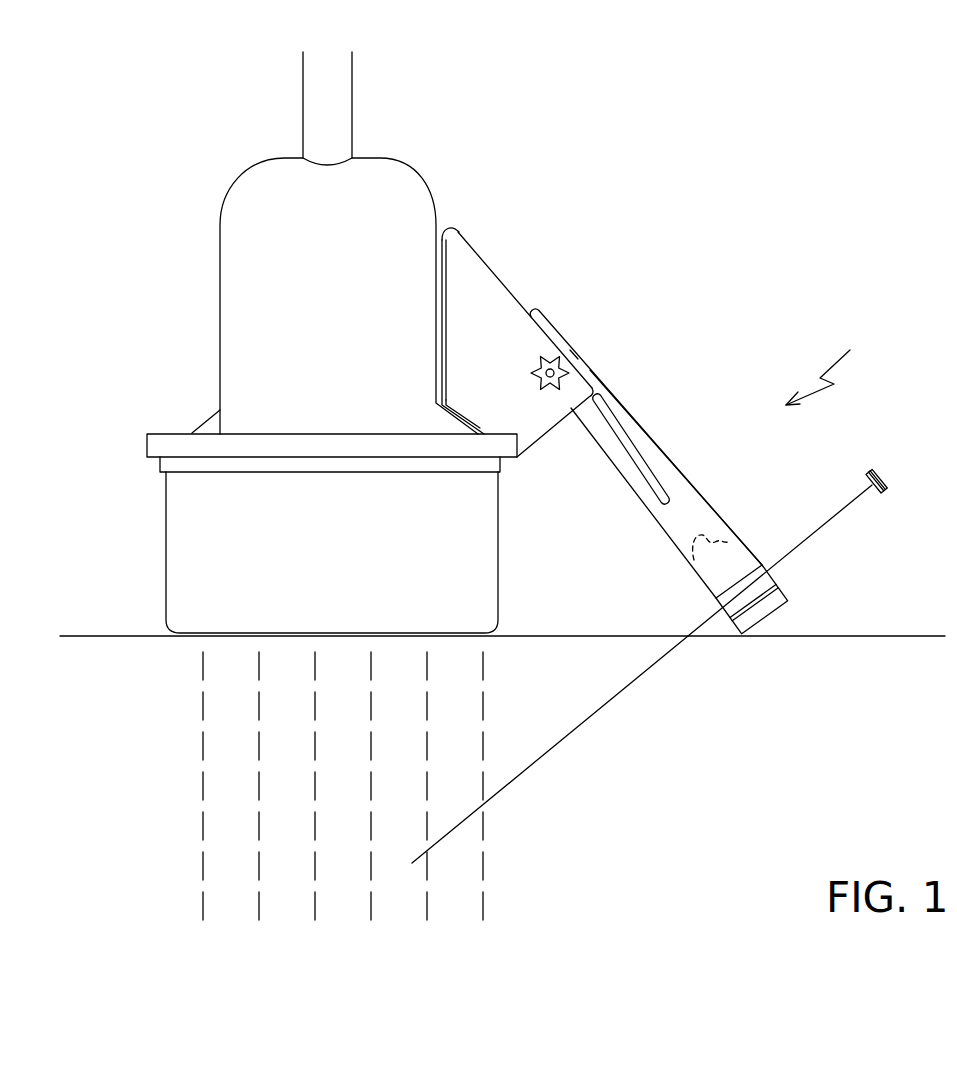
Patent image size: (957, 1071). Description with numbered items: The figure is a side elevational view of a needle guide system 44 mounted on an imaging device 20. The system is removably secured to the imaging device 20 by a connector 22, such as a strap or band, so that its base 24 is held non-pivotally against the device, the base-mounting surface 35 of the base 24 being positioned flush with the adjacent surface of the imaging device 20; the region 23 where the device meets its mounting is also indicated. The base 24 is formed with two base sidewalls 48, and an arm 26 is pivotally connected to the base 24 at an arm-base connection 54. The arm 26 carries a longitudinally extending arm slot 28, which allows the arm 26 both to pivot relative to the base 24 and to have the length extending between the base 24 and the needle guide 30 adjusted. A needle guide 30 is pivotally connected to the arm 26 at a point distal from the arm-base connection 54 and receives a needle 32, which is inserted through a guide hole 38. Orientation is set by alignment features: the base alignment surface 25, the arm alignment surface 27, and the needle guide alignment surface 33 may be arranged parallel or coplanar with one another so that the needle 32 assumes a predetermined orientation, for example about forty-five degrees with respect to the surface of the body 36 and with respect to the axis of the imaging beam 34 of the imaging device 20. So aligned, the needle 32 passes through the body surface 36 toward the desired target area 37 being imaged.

The imaging device 20 is at (404, 186).
The connector 22 is at (165, 447).
The seal junction 23 is at (230, 418).
The base 24 is at (503, 316).
The base alignment surface 25 is at (547, 318).
The arm 26 is at (655, 440).
The arm alignment surface 27 is at (574, 345).
The arm slot 28 is at (612, 428).
The needle guide 30 is at (765, 572).
The needle 32 is at (872, 500).
The needle guide alignment surface 33 is at (746, 552).
The imaging beam 34 is at (198, 676).
The base-mounting surface 35 is at (450, 253).
The surface of the body 36 is at (562, 636).
The desired target area 37 is at (414, 866).
The guide hole 38 is at (763, 572).
The needle guide system 44 is at (837, 364).
The base sidewalls 48 is at (508, 386).
The arm-base connection 54 is at (582, 360).